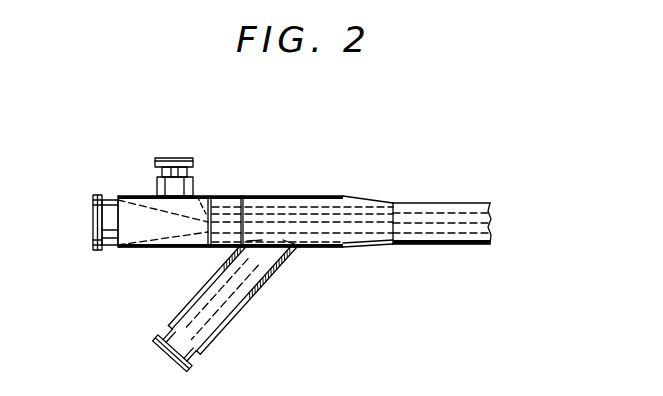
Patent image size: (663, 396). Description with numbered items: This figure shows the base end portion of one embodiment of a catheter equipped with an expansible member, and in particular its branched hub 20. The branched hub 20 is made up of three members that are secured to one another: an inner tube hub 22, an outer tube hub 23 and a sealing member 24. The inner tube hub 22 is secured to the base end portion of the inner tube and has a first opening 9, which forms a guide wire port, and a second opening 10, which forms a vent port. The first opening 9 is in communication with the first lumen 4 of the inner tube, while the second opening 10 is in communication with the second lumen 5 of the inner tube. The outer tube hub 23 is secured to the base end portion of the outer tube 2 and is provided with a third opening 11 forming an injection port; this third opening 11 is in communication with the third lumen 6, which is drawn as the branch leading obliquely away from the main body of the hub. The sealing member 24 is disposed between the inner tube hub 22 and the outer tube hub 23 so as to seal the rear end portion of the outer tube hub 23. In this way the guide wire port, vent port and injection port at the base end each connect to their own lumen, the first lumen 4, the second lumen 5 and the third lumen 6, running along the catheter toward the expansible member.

The outer tube 2 is at (428, 203).
The first lumen 4 is at (346, 230).
The second lumen 5 is at (198, 194).
The third lumen 6 is at (210, 312).
The first opening 9 is at (97, 213).
The second opening 10 is at (174, 158).
The third opening 11 is at (167, 351).
The branched hub 20 is at (307, 192).
The inner tube hub 22 is at (201, 238).
The outer tube hub 23 is at (348, 247).
The sealing member 24 is at (230, 195).